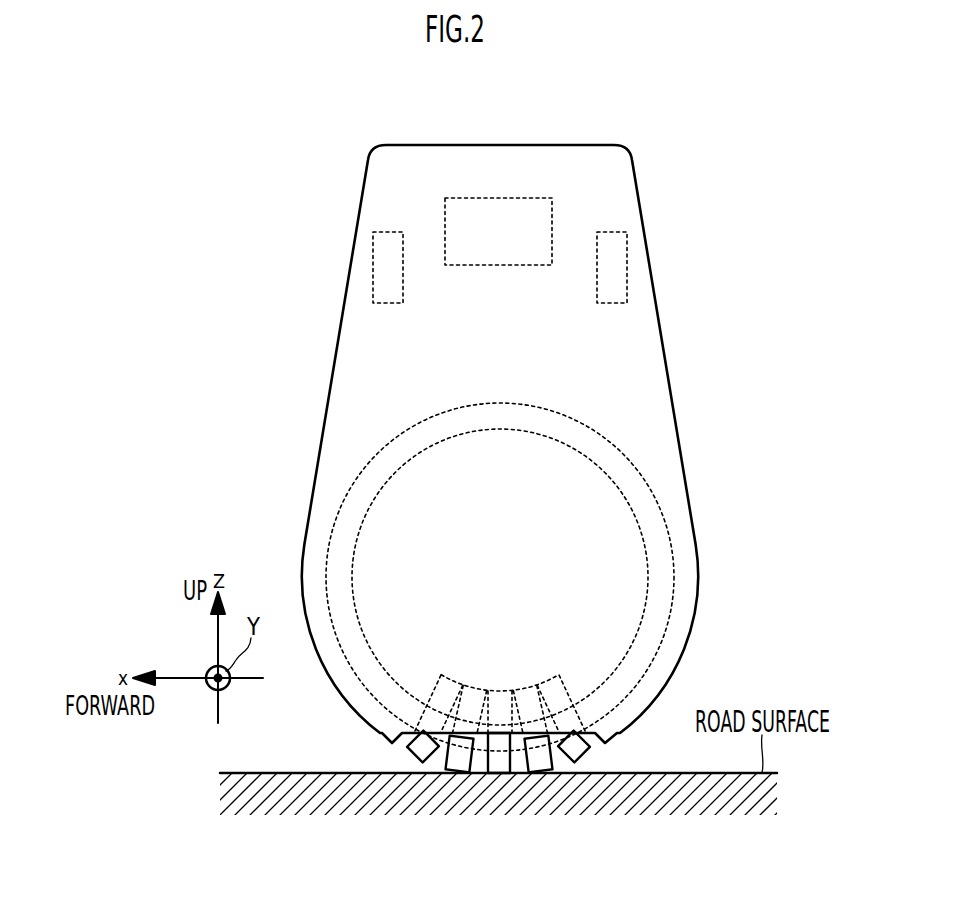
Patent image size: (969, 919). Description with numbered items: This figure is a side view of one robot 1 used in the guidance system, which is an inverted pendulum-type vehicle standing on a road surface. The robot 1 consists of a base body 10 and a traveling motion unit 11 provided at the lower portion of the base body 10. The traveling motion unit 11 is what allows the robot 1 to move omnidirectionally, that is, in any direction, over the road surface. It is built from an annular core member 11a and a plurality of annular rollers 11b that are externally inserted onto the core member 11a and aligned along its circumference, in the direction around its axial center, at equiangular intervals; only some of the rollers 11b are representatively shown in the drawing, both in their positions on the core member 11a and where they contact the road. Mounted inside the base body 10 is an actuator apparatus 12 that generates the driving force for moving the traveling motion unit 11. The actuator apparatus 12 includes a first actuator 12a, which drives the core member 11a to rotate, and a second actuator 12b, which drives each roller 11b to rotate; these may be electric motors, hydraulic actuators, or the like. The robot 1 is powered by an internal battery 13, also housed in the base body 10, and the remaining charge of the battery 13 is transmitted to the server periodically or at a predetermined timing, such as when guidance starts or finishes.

The robot 1 is at (677, 103).
The base body 10 is at (638, 215).
The traveling motion unit 11 is at (604, 764).
The annular core member 11a is at (481, 762).
The annular rollers 11b is at (461, 763).
The actuator apparatus 12 is at (499, 267).
The first actuator 12a is at (372, 277).
The second actuator 12b is at (628, 277).
The battery 13 is at (538, 198).